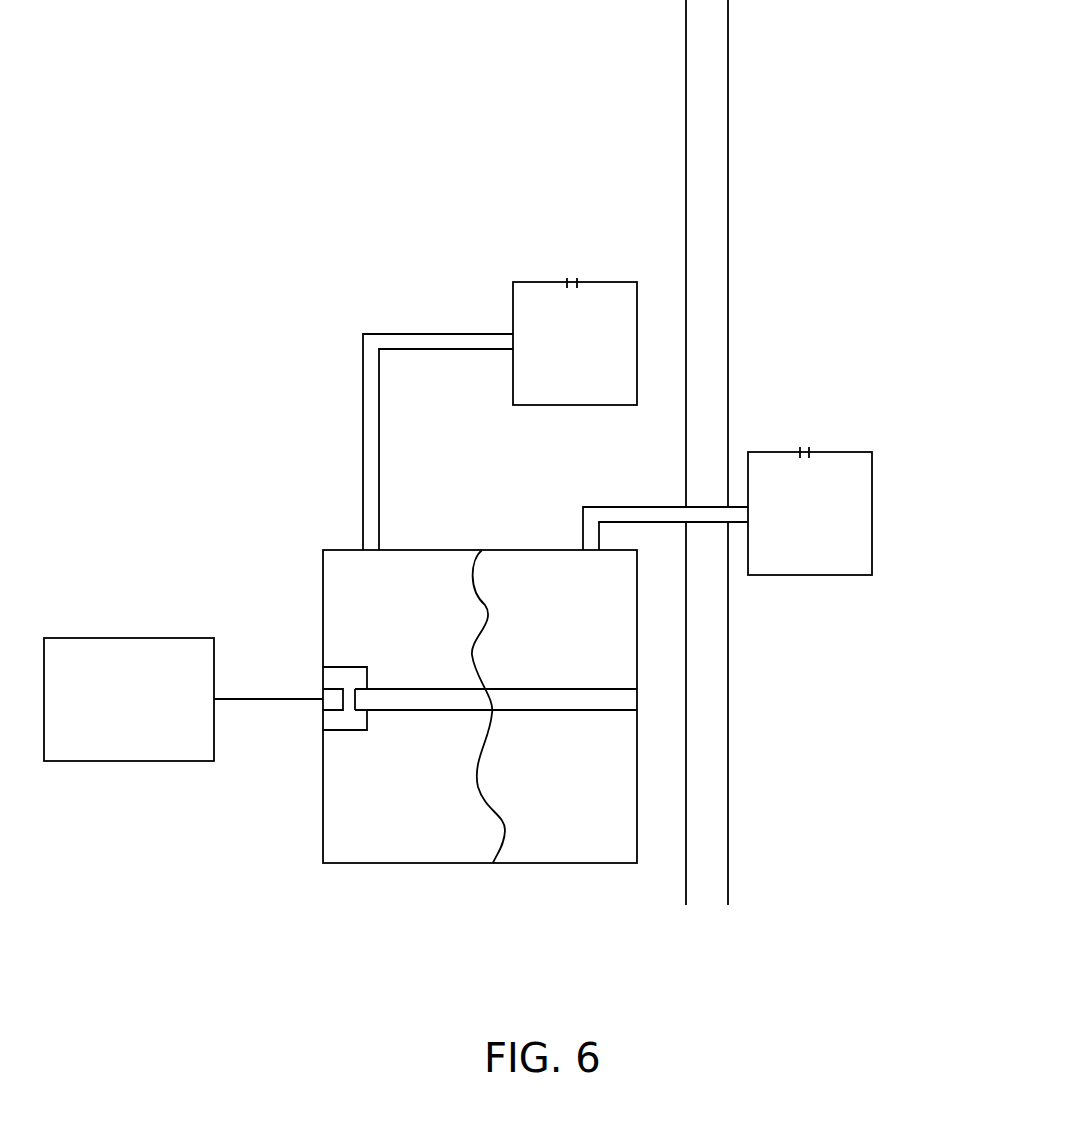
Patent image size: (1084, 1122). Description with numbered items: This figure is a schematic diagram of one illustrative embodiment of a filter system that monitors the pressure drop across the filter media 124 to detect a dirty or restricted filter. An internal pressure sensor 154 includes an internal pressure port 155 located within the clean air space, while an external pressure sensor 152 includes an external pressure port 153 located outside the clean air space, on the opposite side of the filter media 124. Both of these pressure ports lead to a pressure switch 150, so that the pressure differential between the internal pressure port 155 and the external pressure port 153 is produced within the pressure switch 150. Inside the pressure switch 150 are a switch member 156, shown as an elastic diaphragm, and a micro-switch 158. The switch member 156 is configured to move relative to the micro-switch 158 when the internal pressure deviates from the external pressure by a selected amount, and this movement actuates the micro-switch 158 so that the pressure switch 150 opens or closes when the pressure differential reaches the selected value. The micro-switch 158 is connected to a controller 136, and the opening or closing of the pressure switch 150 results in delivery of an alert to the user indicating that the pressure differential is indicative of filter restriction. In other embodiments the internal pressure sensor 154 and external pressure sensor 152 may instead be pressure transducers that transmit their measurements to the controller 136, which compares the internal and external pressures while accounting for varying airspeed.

The filter media 124 is at (728, 53).
The controller 136 is at (133, 637).
The pressure switch 150 is at (449, 863).
The external pressure sensor 152 is at (872, 508).
The external pressure port 153 is at (809, 452).
The internal pressure sensor 154 is at (533, 281).
The internal pressure port 155 is at (577, 282).
The switch member 156 is at (507, 818).
The micro-switch 158 is at (322, 678).